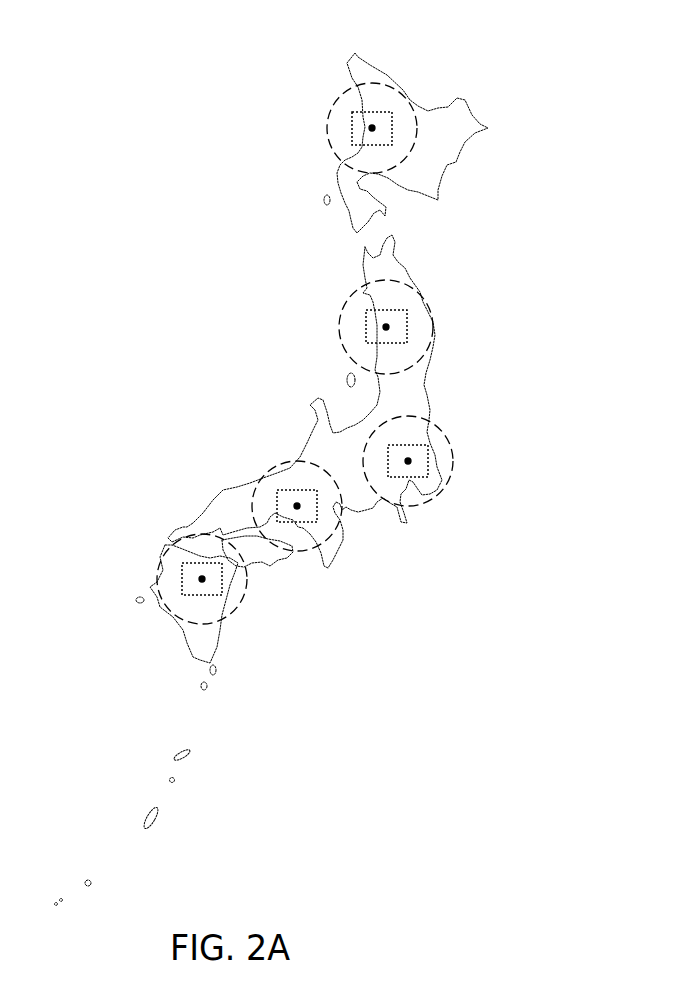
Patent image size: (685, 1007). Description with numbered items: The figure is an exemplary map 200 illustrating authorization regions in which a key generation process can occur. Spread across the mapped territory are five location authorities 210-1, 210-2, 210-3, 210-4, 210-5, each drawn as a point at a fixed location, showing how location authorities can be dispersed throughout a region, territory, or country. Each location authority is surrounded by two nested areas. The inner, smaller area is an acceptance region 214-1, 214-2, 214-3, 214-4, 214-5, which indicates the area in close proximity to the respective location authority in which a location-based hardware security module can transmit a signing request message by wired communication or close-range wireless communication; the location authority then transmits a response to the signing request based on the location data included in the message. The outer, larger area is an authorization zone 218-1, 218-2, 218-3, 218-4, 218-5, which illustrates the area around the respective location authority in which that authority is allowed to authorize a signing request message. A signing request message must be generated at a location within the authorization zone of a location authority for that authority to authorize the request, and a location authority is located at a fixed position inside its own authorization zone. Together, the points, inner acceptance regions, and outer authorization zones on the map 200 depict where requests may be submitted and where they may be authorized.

The map 200 is at (542, 80).
The location authority 210-1 is at (372, 128).
The location authority 210-2 is at (386, 327).
The location authority 210-3 is at (408, 461).
The location authority 210-4 is at (297, 506).
The location authority 210-5 is at (202, 579).
The acceptance region 214-1 is at (353, 146).
The acceptance region 214-2 is at (387, 345).
The acceptance region 214-3 is at (420, 486).
The acceptance region 214-4 is at (300, 522).
The acceptance region 214-5 is at (222, 583).
The authorization zone 218-1 is at (368, 173).
The authorization zone 218-2 is at (430, 394).
The authorization zone 218-3 is at (408, 505).
The authorization zone 218-4 is at (297, 552).
The authorization zone 218-5 is at (212, 623).